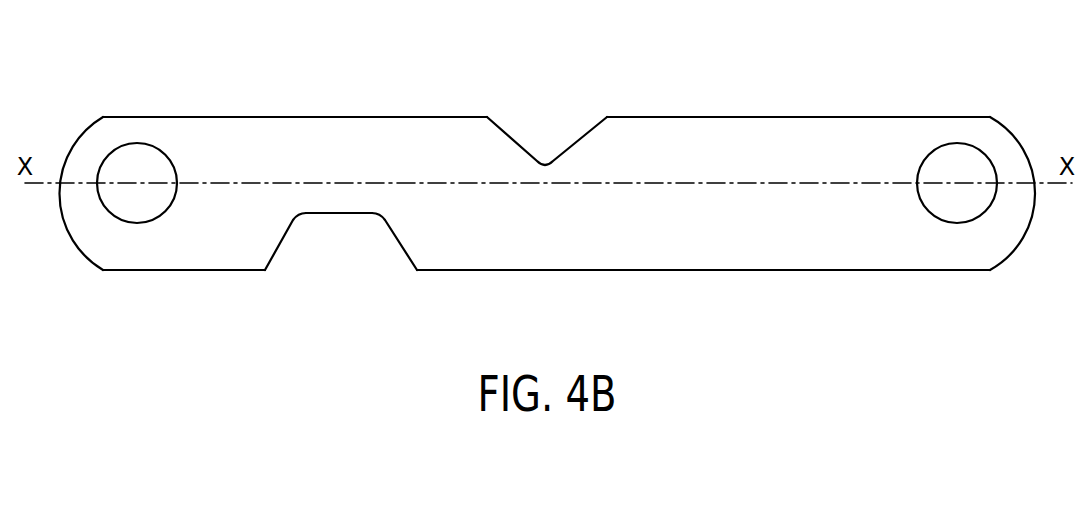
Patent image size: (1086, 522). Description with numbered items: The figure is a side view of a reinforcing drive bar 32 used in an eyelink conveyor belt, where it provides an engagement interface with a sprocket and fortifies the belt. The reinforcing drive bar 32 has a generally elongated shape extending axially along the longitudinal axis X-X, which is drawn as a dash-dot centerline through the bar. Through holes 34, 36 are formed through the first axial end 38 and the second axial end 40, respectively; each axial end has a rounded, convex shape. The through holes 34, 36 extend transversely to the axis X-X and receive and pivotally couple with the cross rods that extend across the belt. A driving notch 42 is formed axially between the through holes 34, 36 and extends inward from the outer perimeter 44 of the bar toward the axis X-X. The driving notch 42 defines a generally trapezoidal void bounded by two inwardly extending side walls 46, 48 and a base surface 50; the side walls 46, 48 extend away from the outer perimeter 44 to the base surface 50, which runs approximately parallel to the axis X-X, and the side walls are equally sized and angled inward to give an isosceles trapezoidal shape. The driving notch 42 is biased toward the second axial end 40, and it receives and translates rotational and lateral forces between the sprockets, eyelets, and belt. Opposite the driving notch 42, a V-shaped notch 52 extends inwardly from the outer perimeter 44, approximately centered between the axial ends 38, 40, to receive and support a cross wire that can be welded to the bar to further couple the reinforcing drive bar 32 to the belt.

The reinforcing drive bar 32 is at (547, 195).
The through hole 34 is at (929, 155).
The through hole 36 is at (165, 155).
The first axial end 38 is at (1022, 222).
The second axial end 40 is at (73, 222).
The driving notch 42 is at (341, 290).
The outer perimeter 44 is at (705, 271).
The side wall 46 is at (403, 246).
The side wall 48 is at (278, 246).
The base surface 50 is at (343, 214).
The V-shaped notch 52 is at (537, 121).